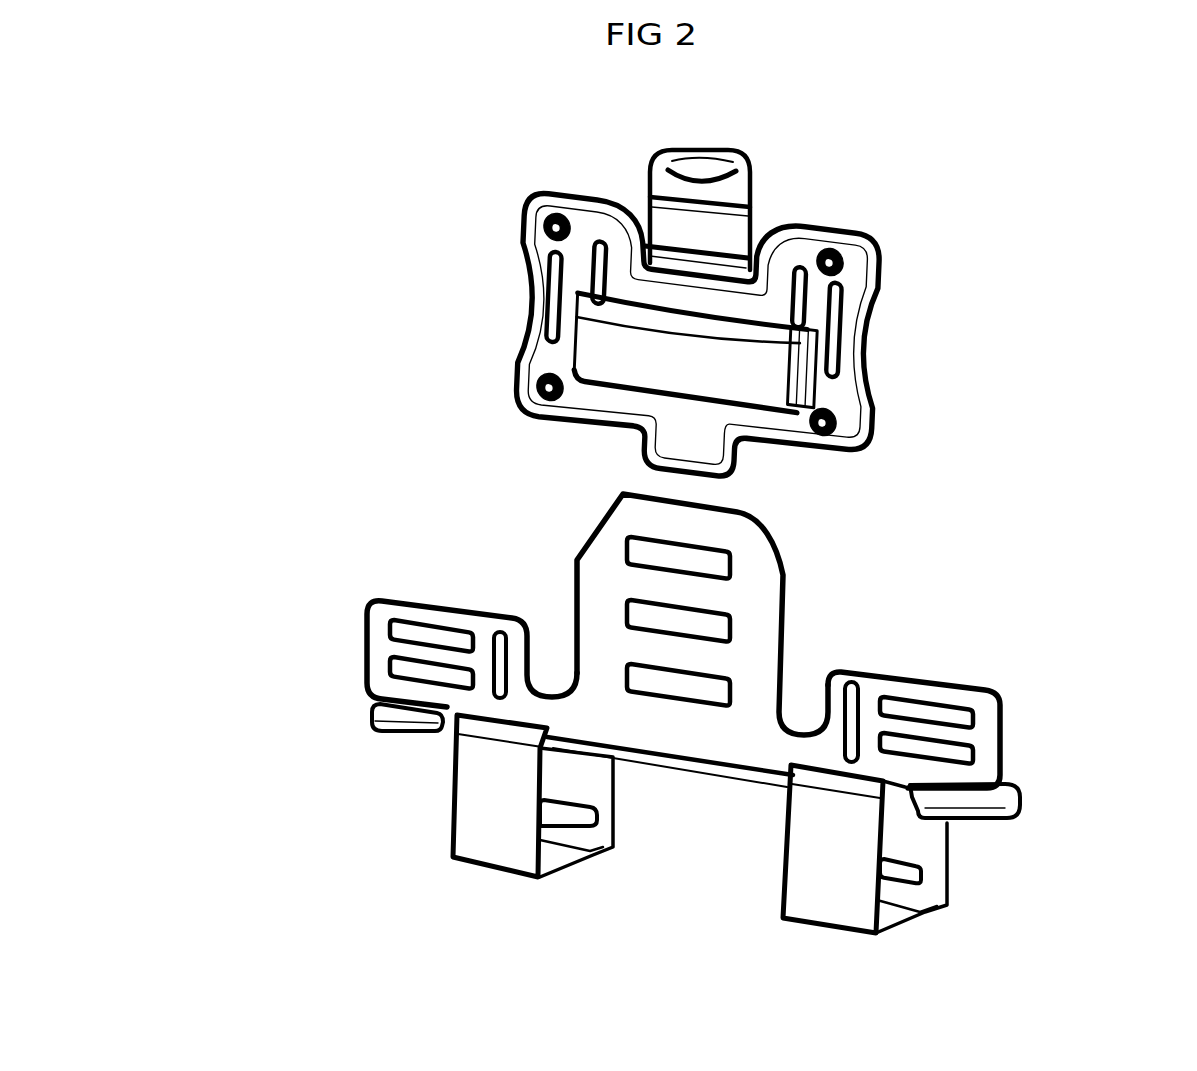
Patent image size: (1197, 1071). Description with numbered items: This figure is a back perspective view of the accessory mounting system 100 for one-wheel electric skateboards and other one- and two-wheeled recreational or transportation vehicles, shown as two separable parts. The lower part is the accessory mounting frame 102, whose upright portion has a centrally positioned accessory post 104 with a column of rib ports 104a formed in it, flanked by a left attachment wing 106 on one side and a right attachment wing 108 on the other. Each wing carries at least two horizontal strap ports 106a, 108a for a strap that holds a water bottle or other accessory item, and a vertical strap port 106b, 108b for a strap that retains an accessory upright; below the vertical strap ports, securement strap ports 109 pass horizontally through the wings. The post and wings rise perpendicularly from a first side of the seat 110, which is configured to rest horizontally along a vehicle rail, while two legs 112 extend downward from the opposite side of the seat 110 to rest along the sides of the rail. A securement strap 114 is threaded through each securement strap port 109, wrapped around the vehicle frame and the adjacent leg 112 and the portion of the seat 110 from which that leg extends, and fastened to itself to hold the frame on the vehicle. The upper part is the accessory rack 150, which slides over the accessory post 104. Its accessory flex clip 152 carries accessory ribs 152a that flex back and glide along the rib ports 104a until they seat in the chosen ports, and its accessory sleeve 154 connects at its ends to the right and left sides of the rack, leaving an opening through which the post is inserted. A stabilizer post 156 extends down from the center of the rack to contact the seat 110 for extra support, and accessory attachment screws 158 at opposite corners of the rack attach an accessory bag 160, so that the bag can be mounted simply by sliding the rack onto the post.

The accessory mounting system 100 is at (257, 177).
The accessory mounting frame 102 is at (297, 476).
The accessory post 104 is at (573, 560).
The rib ports 104a is at (690, 680).
The left attachment wing 106 is at (1003, 725).
The horizontal strap ports 106a is at (950, 757).
The vertical strap port 106b is at (870, 683).
The right attachment wing 108 is at (370, 603).
The horizontal strap ports 108a is at (427, 670).
The vertical strap port 108b is at (488, 627).
The securement strap ports 109 is at (522, 713).
The seat 110 is at (1025, 808).
The leg 112 is at (592, 772).
The securement strap 114 is at (810, 882).
The accessory rack 150 is at (410, 151).
The accessory flex clip 152 is at (652, 172).
The accessory ribs 152a is at (717, 243).
The accessory sleeve 154 is at (773, 373).
The stabilizer post 156 is at (746, 461).
The accessory attachment screws 158 is at (540, 225).
The accessory bag 160 is at (848, 292).